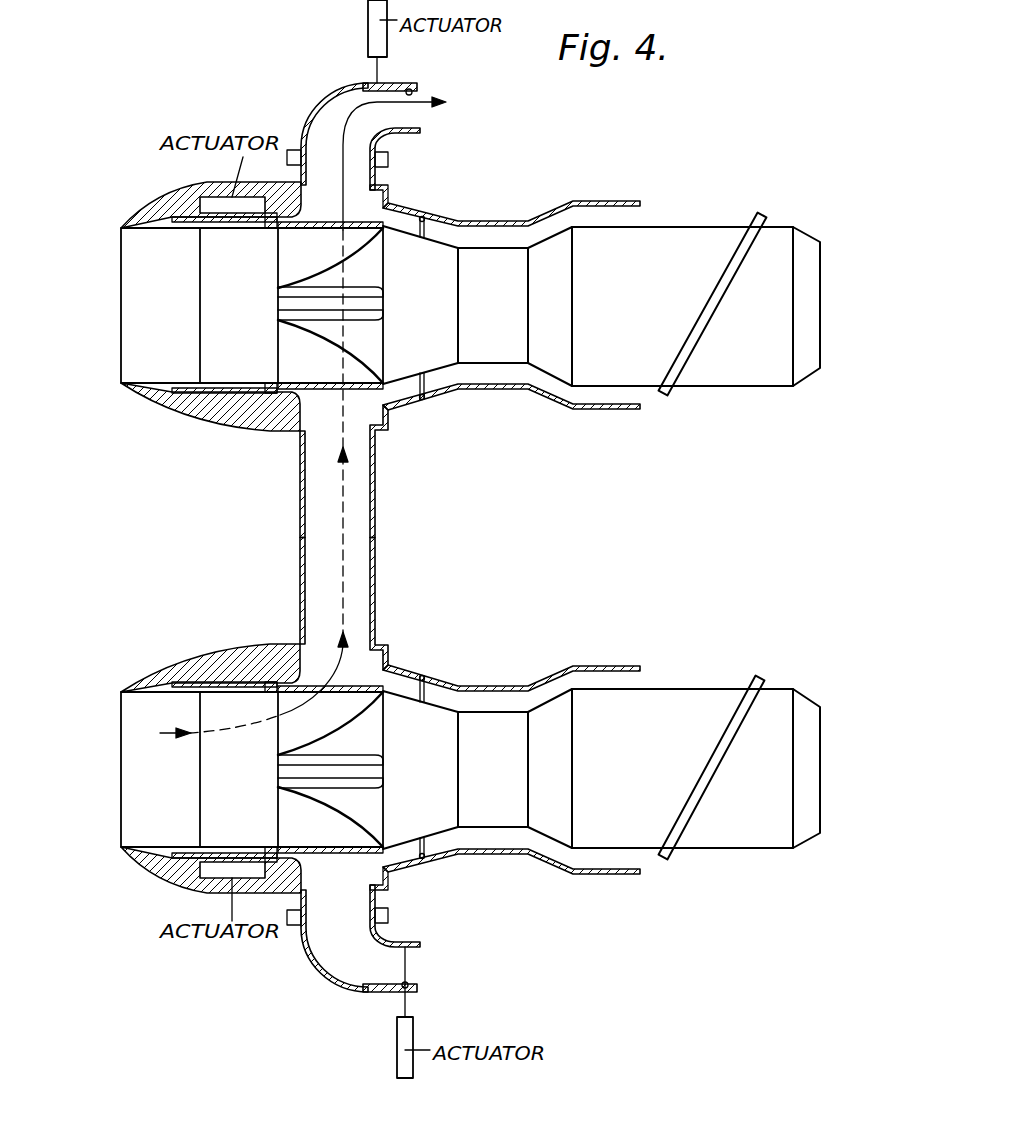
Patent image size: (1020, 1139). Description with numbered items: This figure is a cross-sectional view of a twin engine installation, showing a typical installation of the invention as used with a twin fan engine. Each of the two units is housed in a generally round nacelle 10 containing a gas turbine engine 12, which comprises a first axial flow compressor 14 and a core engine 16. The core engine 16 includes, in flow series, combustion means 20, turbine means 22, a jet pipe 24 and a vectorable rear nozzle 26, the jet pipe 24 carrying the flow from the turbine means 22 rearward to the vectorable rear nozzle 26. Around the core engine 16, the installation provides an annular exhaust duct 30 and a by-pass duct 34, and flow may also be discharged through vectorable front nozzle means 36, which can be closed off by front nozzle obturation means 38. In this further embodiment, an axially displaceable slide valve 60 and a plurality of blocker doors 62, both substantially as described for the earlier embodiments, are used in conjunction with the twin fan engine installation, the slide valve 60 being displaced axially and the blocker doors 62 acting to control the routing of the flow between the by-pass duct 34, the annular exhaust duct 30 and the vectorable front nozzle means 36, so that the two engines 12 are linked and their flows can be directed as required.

The nacelle 10 is at (235, 432).
The gas turbine engine 12 is at (655, 242).
The first axial flow compressor 14 is at (235, 357).
The core engine 16 is at (508, 370).
The combustion means 20 is at (482, 262).
The turbine means 22 is at (548, 257).
The jet pipe 24 is at (712, 232).
The vectorable rear nozzle 26 is at (802, 250).
The annular exhaust duct 30 is at (367, 413).
The by-pass duct 34 is at (548, 388).
The vectorable front nozzle means 36 is at (322, 100).
The front nozzle obturation means 38 is at (393, 82).
The axially displaceable slide valve 60 is at (357, 228).
The blocker doors 62 is at (423, 382).